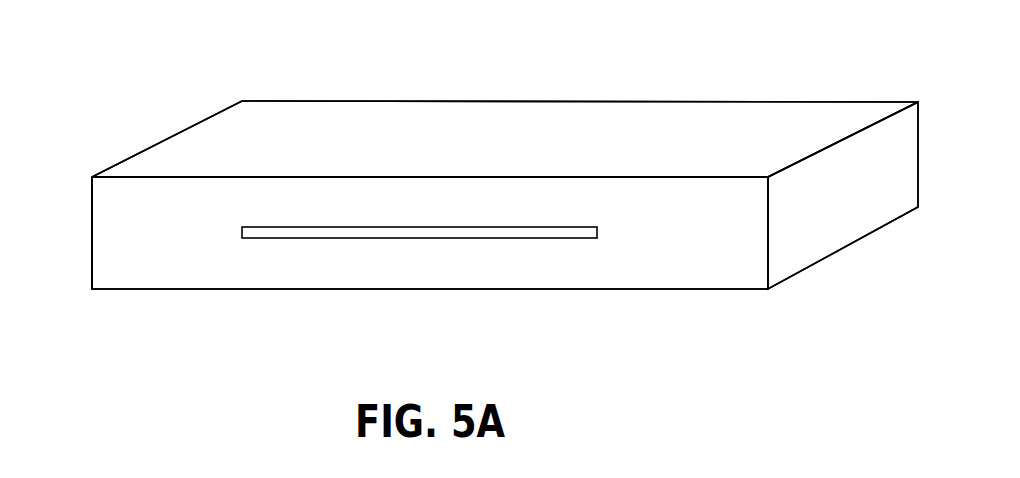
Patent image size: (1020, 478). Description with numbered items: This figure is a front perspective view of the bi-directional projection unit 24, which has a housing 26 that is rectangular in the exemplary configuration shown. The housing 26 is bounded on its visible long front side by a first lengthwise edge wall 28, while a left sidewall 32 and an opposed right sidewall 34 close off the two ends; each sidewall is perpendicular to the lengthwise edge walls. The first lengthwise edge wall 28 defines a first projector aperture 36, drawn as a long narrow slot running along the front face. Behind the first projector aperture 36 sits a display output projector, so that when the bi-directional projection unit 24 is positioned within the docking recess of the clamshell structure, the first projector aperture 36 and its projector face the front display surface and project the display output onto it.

The bi-directional projection unit 24 is at (205, 66).
The housing 26 is at (621, 117).
The first lengthwise edge wall 28 is at (625, 275).
The left sidewall 32 is at (76, 218).
The right sidewall 34 is at (855, 206).
The first projector aperture 36 is at (430, 232).